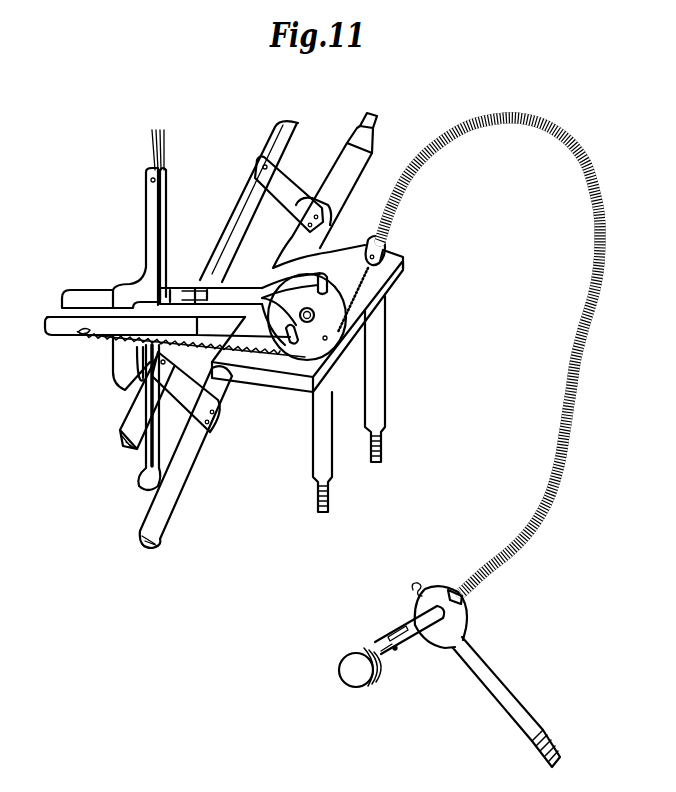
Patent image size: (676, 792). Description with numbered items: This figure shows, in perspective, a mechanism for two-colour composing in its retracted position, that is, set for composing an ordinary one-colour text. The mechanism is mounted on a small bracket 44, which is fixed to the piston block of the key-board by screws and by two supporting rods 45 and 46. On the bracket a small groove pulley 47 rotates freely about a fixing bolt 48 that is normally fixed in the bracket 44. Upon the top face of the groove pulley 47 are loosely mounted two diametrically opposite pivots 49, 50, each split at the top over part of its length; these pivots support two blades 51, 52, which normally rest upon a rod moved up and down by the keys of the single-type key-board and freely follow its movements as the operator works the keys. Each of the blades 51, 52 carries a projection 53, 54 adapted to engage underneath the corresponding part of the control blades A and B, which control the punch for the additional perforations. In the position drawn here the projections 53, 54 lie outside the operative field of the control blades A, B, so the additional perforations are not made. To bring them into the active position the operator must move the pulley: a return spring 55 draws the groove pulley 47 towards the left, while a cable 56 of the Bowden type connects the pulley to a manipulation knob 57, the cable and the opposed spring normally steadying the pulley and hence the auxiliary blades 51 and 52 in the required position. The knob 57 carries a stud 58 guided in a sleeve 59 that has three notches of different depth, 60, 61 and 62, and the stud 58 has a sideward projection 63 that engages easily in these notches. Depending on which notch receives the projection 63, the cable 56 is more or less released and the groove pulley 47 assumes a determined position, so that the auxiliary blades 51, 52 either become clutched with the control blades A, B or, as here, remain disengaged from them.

The control blade A is at (146, 188).
The control blade B is at (167, 177).
The bracket 44 is at (288, 368).
The supporting rod 45 is at (318, 433).
The supporting rod 46 is at (380, 394).
The groove pulley 47 is at (316, 320).
The fixing bolt 48 is at (378, 300).
The pivot 49 is at (283, 345).
The pivot 50 is at (318, 256).
The blade 51 is at (58, 330).
The blade 52 is at (103, 290).
The projection 53 is at (173, 287).
The projection 54 is at (190, 287).
The return spring 55 is at (102, 343).
The cable 56 is at (490, 128).
The manipulation knob 57 is at (358, 679).
The stud 58 is at (388, 655).
The sleeve 59 is at (413, 617).
The notch 60 is at (398, 650).
The notch 61 is at (380, 647).
The notch 62 is at (401, 634).
The sideward projection 63 is at (465, 641).